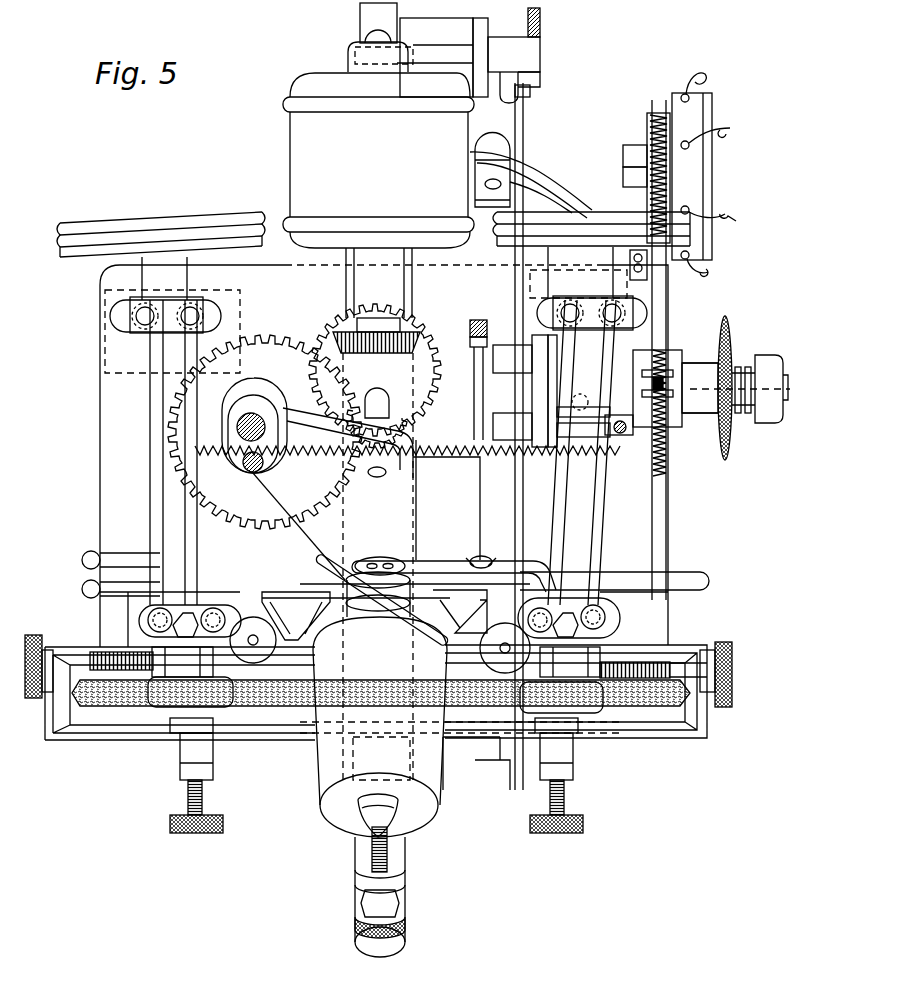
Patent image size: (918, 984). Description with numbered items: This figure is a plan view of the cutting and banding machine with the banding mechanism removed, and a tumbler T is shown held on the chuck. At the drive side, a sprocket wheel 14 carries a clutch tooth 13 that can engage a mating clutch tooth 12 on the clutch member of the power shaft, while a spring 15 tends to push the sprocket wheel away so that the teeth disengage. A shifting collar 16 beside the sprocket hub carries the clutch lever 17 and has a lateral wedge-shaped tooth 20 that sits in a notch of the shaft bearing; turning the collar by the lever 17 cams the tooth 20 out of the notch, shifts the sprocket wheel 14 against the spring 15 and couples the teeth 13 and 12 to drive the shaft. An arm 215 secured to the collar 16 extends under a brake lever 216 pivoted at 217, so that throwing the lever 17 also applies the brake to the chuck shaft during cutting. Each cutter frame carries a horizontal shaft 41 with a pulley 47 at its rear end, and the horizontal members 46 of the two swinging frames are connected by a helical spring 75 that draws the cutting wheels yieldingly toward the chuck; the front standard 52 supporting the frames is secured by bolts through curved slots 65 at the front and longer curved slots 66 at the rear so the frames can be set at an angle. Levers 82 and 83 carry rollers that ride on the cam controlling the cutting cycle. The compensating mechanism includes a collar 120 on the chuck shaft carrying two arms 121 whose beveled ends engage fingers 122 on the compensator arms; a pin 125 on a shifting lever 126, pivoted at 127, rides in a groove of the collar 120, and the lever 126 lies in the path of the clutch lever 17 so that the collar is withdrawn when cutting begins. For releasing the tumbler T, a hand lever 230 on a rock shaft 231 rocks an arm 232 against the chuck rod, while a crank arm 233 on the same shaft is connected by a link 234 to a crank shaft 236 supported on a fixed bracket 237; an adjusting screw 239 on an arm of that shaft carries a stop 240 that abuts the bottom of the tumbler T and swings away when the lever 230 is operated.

The arm 232 is at (363, 20).
The hand lever 230 is at (549, 12).
The rock shaft 231 is at (543, 57).
The crank arm 233 is at (540, 73).
The link 234 is at (523, 110).
The pivot 217 is at (503, 172).
The brake lever 216 is at (540, 183).
The pulleys 47 is at (113, 223).
The curved slots 66 is at (112, 317).
The arm 215 is at (640, 295).
The sprocket wheel 14 is at (732, 335).
The clutch tooth 13 is at (743, 367).
The shifting collar 16 is at (680, 357).
The spring 15 is at (717, 430).
The clutch tooth 12 is at (743, 420).
The horizontal member 46 is at (152, 468).
The horizontal shaft 41 is at (162, 496).
The helical spring 75 is at (480, 460).
The wedge-shaped tooth 20 is at (628, 440).
The lever 17 is at (667, 510).
The lever 83 is at (83, 553).
The lever 82 is at (83, 582).
The curved slots 65 is at (140, 622).
The arms 121 is at (320, 563).
The fingers 122 is at (320, 597).
The pin 125 is at (380, 557).
The shifting lever 126 is at (420, 560).
The pivot 127 is at (480, 558).
The collar 120 is at (393, 592).
The front standard 52 is at (613, 590).
The tumbler T is at (322, 765).
The fixed bracket 237 is at (498, 792).
The stop or holding member 240 is at (377, 800).
The crank shaft 236 is at (360, 858).
The adjusting screw 239 is at (387, 856).